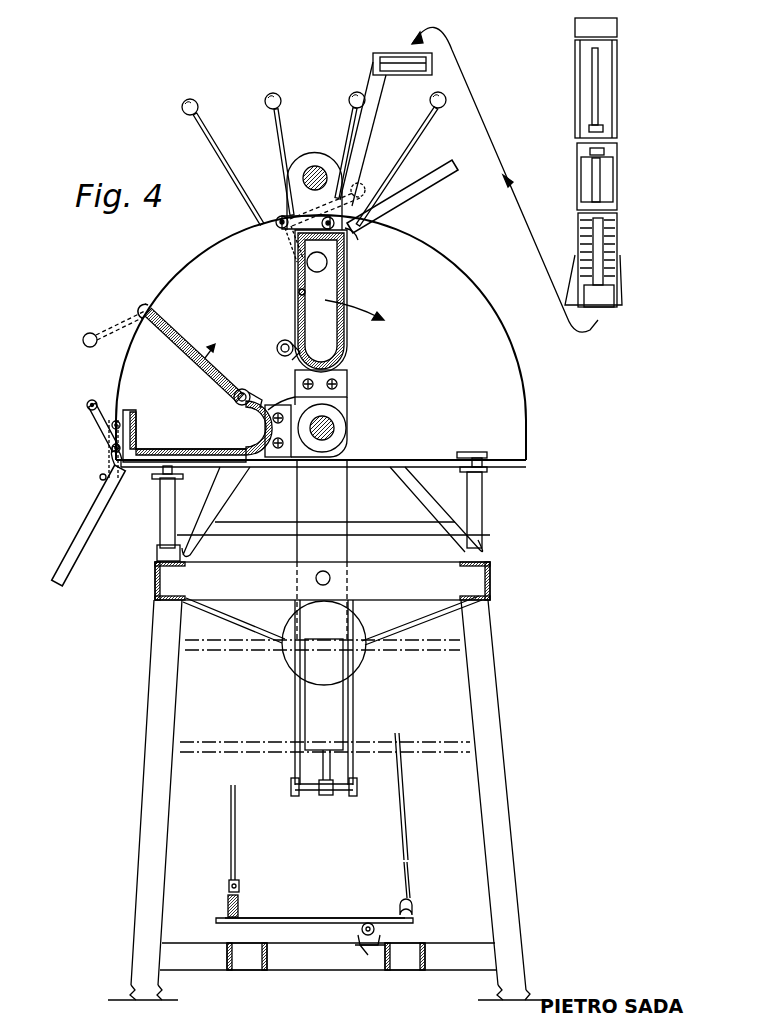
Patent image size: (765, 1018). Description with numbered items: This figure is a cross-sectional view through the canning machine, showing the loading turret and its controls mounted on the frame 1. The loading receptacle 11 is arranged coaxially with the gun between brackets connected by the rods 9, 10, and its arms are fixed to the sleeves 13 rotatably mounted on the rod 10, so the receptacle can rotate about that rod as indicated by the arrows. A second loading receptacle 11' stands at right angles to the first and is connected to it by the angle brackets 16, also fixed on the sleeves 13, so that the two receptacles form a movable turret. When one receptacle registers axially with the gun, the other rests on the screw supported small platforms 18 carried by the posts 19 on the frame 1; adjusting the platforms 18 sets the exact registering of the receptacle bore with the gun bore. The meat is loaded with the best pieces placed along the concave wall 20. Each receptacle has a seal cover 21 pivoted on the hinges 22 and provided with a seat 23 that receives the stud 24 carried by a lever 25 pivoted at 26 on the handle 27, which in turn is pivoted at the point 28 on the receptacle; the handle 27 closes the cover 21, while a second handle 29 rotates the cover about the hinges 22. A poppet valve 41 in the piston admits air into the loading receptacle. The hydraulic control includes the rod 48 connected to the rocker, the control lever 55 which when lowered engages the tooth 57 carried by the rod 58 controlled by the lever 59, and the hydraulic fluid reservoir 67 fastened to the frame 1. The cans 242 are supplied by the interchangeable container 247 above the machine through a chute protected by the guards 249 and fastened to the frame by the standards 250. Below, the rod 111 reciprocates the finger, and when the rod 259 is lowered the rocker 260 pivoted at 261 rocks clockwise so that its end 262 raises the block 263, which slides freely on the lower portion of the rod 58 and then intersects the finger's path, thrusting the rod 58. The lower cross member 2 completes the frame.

The frame 1 is at (155, 580).
The lower cross member 2 is at (453, 943).
The rod 9 is at (303, 178).
The rod 10 is at (332, 434).
The loading receptacle 11 is at (340, 301).
The second loading receptacle 11' is at (137, 484).
The sleeves 13 is at (347, 428).
The angle brackets 16 is at (349, 397).
The small platforms 18 is at (182, 466).
The posts 19 is at (160, 526).
The concave wall 20 is at (342, 352).
The seal cover 21 is at (297, 298).
The hinges 22 is at (246, 390).
The seat 23 is at (280, 216).
The stud 24 is at (279, 227).
The lever 25 is at (327, 216).
The pivot 26 is at (352, 236).
The handle 27 is at (441, 168).
The pivot point 28 is at (120, 420).
The second handle 29 is at (359, 189).
The poppet valve 41 is at (310, 266).
The rod 48 is at (265, 485).
The control lever 55 is at (222, 149).
The tooth 57 is at (340, 703).
The rod 58 is at (236, 827).
The lever 59 is at (270, 94).
The reservoir 67 is at (354, 631).
The rod 111 is at (229, 885).
The cans 242 is at (608, 300).
The interchangeable container 247 is at (575, 33).
The guards 249 is at (578, 206).
The standards 250 is at (373, 100).
The rod 259 is at (408, 800).
The rocker 260 is at (350, 917).
The pivot 261 is at (361, 932).
The end of rocker 262 is at (217, 921).
The block 263 is at (240, 906).